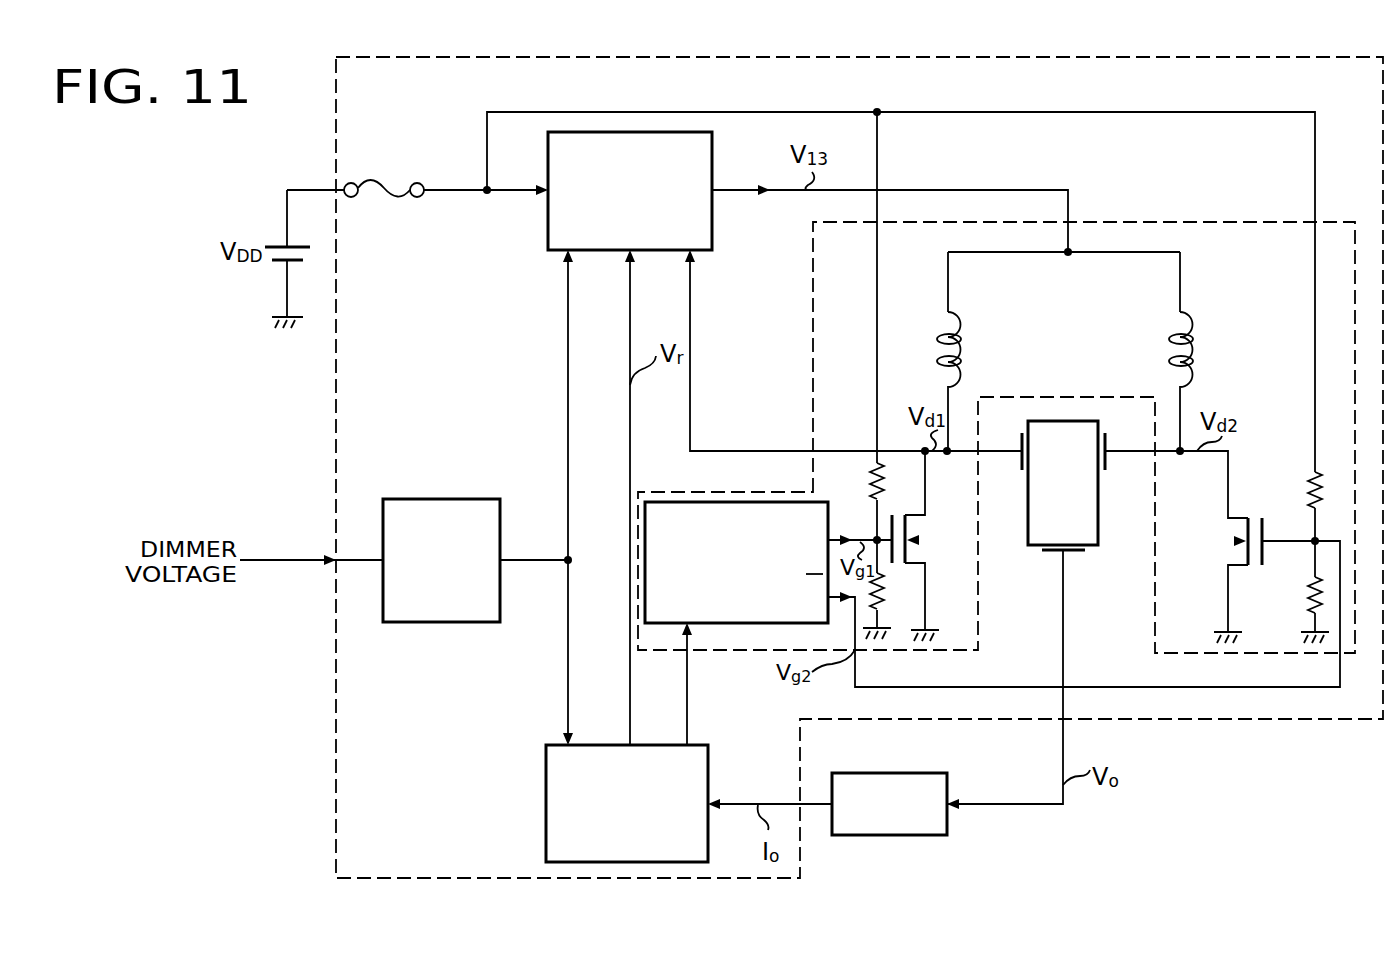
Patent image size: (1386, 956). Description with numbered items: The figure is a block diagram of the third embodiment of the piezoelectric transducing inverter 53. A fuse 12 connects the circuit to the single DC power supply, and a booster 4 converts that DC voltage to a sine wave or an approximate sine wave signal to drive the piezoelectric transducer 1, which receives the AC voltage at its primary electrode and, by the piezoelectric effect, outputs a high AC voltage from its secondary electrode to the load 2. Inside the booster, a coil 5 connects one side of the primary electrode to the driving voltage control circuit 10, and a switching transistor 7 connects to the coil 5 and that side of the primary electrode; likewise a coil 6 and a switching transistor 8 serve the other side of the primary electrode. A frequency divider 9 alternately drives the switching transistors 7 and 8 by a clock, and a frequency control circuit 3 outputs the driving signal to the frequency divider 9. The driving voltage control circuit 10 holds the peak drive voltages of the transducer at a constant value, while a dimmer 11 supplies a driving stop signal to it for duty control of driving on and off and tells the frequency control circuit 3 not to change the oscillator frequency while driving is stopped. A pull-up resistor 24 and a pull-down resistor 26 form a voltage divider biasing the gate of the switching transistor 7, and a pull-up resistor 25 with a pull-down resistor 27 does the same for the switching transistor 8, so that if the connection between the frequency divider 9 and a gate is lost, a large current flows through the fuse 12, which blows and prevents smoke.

The piezoelectric transducer 1 is at (1100, 495).
The load 2 is at (925, 773).
The frequency control circuit 3 is at (708, 765).
The booster 4 is at (1092, 222).
The coil 5 is at (942, 334).
The coil 6 is at (1190, 328).
The switching transistor 7 is at (922, 548).
The switching transistor 8 is at (1228, 546).
The frequency divider 9 is at (686, 500).
The driving voltage control circuit 10 is at (548, 236).
The dimmer 11 is at (460, 497).
The fuse 12 is at (350, 183).
The pull-up resistor 24 is at (894, 478).
The pull-up resistor 25 is at (1308, 490).
The pull-down resistor 26 is at (894, 591).
The pull-down resistor 27 is at (1308, 597).
The piezoelectric transducing inverter 53 is at (338, 430).